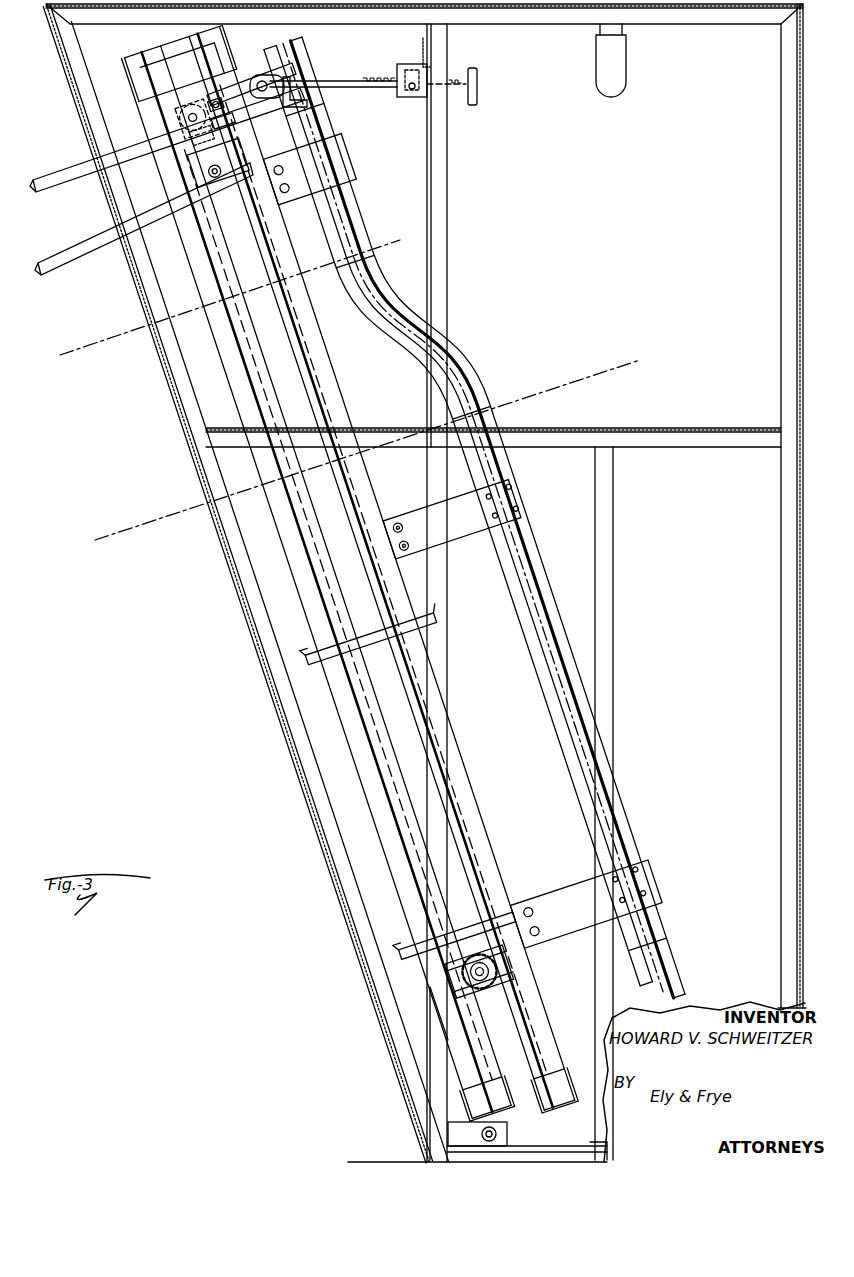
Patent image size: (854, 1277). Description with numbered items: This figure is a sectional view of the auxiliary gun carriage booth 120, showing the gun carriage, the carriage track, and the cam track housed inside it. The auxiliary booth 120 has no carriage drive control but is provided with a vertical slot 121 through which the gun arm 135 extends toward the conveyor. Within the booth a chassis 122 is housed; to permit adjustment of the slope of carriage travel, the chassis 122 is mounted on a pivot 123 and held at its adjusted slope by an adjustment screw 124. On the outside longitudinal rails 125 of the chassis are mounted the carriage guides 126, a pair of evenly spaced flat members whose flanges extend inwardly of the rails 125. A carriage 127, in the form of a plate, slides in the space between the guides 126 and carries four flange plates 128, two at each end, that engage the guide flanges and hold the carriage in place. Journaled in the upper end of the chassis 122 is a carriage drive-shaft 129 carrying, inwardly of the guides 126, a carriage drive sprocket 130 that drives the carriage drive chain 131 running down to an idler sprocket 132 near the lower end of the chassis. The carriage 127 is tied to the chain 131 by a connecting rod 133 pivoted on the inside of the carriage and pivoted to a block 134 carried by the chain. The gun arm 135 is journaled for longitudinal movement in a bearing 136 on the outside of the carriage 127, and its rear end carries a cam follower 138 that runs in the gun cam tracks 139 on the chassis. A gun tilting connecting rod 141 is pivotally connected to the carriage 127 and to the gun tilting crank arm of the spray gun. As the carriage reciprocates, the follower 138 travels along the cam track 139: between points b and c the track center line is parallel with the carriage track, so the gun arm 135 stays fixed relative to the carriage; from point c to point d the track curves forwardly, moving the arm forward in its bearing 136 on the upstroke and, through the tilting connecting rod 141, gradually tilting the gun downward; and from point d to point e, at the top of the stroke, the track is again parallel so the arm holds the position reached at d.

The auxiliary gun carriage booth 120 is at (97, 48).
The vertical slot 121 is at (393, 1056).
The chassis 122 is at (458, 732).
The pivot 123 is at (500, 1127).
The adjustment screw 124 is at (478, 86).
The outside longitudinal rails 125 is at (532, 1075).
The carriage guides 126 is at (358, 575).
The carriage 127 is at (172, 158).
The flange plates 128 is at (203, 132).
The carriage drive-shaft 129 is at (162, 125).
The carriage drive sprocket 130 is at (155, 112).
The carriage drive chain 131 is at (365, 584).
The idler sprocket 132 is at (488, 998).
The connecting rod 133 is at (257, 135).
The block 134 is at (210, 80).
The gun arm 135 is at (63, 183).
The bearing 136 is at (254, 118).
The cam follower 138 is at (306, 98).
The gun cam tracks 139 is at (473, 522).
The gun tilting connecting rod 141 is at (68, 264).
The point b is at (672, 935).
The point c is at (492, 398).
The point d is at (355, 288).
The point e is at (317, 80).